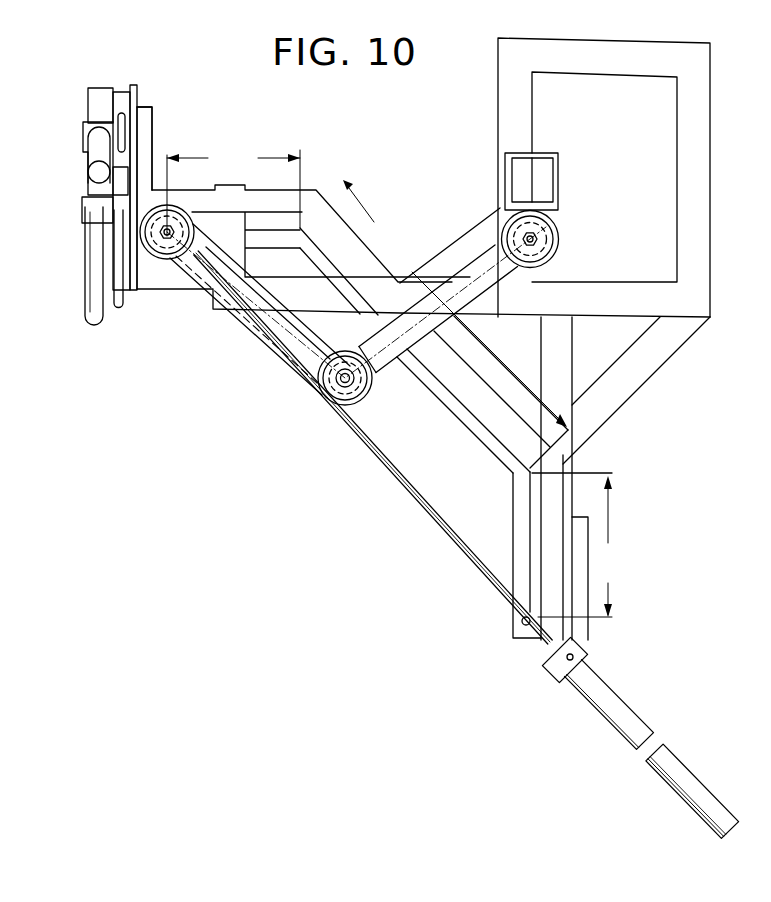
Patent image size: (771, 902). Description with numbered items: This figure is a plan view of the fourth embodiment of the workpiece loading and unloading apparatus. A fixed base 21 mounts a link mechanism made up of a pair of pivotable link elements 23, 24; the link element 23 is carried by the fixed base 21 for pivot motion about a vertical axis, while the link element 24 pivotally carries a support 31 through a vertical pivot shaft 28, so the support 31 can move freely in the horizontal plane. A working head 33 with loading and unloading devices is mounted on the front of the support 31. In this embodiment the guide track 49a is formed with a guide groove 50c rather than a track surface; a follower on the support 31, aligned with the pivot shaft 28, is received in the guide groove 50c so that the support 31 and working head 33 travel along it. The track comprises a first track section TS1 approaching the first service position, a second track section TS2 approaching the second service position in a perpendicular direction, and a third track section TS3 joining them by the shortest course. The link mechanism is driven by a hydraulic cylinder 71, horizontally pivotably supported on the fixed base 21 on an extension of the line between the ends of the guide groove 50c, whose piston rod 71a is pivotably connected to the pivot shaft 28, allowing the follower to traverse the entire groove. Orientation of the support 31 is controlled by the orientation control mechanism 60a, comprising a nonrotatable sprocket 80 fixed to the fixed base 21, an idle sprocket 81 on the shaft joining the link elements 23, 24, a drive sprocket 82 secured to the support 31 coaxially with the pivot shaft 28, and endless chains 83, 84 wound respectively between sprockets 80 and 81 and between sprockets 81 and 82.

The fixed base 21 is at (697, 228).
The link element 23 is at (445, 316).
The link element 24 is at (290, 335).
The pivot shaft 28 is at (168, 226).
The support 31 is at (136, 92).
The working head 33 is at (66, 231).
The guide track 49a is at (557, 489).
The guide groove 50c is at (523, 505).
The orientation control mechanism 60a is at (446, 250).
The hydraulic cylinder 71 is at (623, 708).
The piston rod 71a is at (413, 495).
The nonrotatable sprocket 80 is at (558, 228).
The idle sprocket 81 is at (330, 400).
The drive sprocket 82 is at (160, 258).
The endless chain 83 is at (397, 374).
The endless chain 84 is at (237, 322).
The first track section TS1 is at (233, 191).
The second track section TS2 is at (591, 546).
The third track section TS3 is at (380, 219).